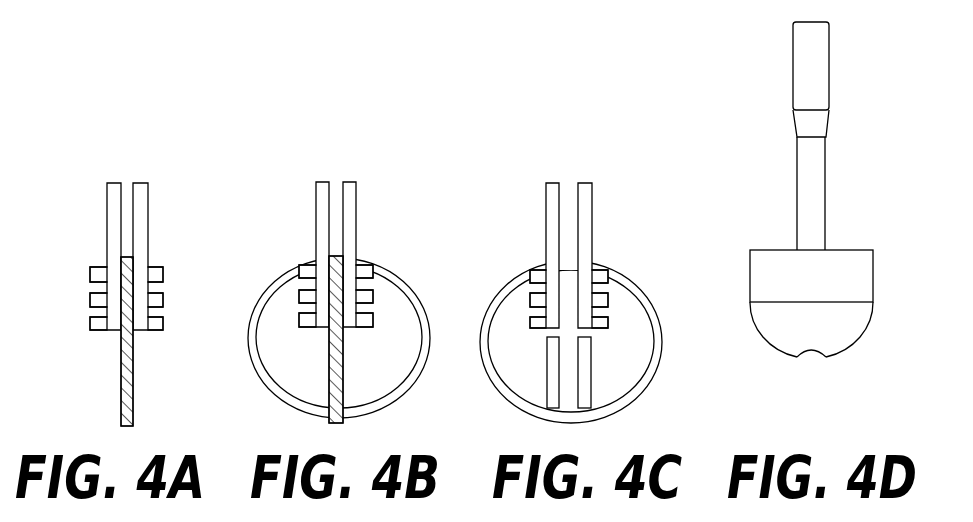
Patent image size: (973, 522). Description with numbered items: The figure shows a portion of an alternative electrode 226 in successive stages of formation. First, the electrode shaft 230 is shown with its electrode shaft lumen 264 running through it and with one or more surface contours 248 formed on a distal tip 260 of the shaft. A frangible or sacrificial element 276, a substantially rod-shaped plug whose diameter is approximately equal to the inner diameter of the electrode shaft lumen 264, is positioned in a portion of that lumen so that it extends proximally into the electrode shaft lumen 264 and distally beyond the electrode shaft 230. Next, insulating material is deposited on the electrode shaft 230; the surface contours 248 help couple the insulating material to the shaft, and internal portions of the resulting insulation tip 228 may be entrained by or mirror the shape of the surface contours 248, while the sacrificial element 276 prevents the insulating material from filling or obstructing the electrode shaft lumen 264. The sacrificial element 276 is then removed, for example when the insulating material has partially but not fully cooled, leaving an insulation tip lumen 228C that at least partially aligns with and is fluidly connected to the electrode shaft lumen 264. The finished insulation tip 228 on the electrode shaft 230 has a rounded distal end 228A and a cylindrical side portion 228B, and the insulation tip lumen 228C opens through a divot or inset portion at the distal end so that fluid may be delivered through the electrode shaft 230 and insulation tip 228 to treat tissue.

In FIG. 4C, the electrode 226 is at (702, 253).
In FIG. 4D, the electrode 226 is at (812, 235).
In FIG. 4B, the insulation tip 228 is at (423, 303).
In FIG. 4C, the insulation tip 228 is at (657, 313).
In FIG. 4D, the insulation tip 228 is at (812, 319).
In FIG. 4D, the rounded distal end 228A is at (793, 358).
In FIG. 4D, the cylindrical side portion 228B is at (875, 283).
In FIG. 4C, the insulation tip lumen 228C is at (568, 383).
In FIG. 4D, the insulation tip lumen 228C is at (807, 365).
In FIG. 4A, the electrode shaft 230 is at (147, 213).
In FIG. 4B, the electrode shaft 230 is at (356, 197).
In FIG. 4C, the electrode shaft 230 is at (569, 255).
In FIG. 4D, the electrode shaft 230 is at (827, 197).
In FIG. 4A, the surface contours 248 is at (164, 272).
In FIG. 4B, the surface contours 248 is at (373, 272).
In FIG. 4C, the surface contours 248 is at (608, 275).
In FIG. 4A, the distal tip 260 is at (129, 296).
In FIG. 4A, the electrode shaft lumen 264 is at (127, 215).
In FIG. 4B, the electrode shaft lumen 264 is at (333, 218).
In FIG. 4C, the electrode shaft lumen 264 is at (563, 190).
In FIG. 4A, the sacrificial element 276 is at (122, 362).
In FIG. 4B, the sacrificial element 276 is at (329, 370).